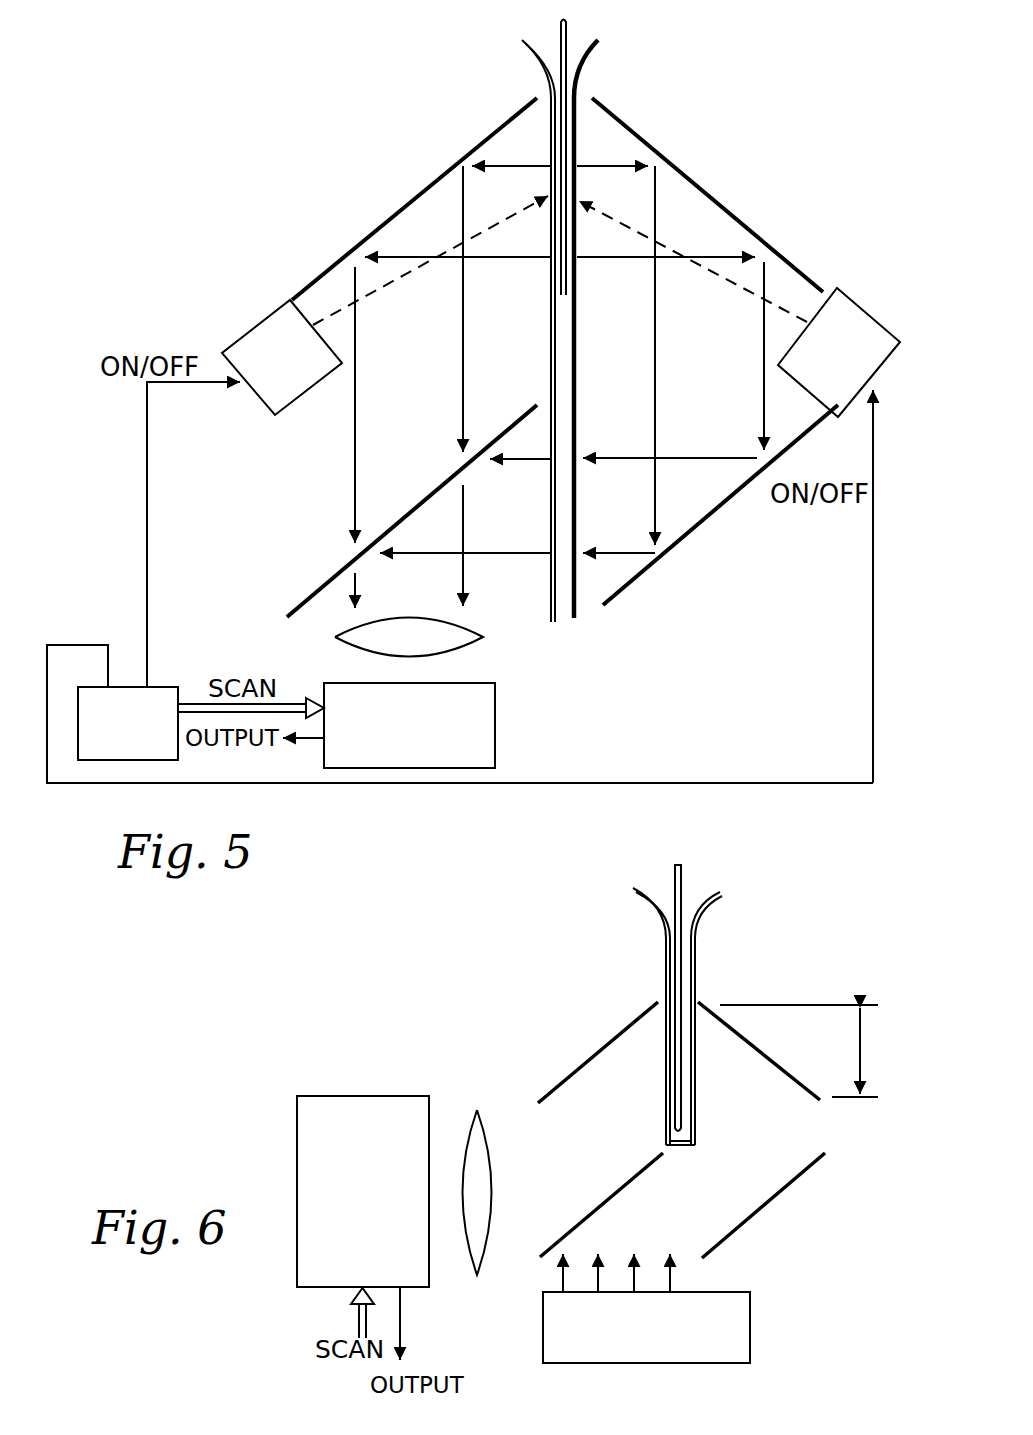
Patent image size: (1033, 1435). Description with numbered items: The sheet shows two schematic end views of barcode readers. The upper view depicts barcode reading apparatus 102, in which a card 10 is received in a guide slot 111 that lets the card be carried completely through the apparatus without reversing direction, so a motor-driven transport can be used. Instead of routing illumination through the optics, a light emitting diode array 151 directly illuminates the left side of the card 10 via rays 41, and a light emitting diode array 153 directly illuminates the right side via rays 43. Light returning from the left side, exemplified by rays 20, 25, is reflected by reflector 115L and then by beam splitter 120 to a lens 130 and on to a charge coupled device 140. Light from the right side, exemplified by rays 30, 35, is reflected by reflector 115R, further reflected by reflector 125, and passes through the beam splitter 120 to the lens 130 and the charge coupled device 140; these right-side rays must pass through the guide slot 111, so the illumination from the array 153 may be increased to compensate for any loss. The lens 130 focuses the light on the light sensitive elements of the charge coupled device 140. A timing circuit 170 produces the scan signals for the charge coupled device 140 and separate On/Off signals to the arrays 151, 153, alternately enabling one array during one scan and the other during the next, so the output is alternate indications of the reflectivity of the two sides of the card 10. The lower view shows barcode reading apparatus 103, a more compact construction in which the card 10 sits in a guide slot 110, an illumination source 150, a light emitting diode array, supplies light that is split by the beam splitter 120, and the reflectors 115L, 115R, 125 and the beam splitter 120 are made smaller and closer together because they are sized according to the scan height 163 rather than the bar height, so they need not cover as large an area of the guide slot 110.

In FIG. 5, the card 10 is at (570, 40).
In FIG. 6, the card 10 is at (682, 872).
In FIG. 5, the guide slot 111 is at (548, 88).
In FIG. 6, the guide slot 110 is at (664, 933).
In FIG. 5, the reflector 115L is at (437, 180).
In FIG. 6, the reflector 115L is at (628, 1030).
In FIG. 5, the reflector 115R is at (684, 175).
In FIG. 6, the reflector 115R is at (738, 1034).
In FIG. 5, the barcode reading apparatus 102 is at (714, 128).
In FIG. 6, the barcode reading apparatus 103 is at (760, 958).
In FIG. 5, the light emitting diode array 151 is at (268, 310).
In FIG. 5, the light emitting diode array 153 is at (880, 270).
In FIG. 6, the illumination source 150 is at (543, 1336).
In FIG. 5, the timing circuit 170 is at (157, 687).
In FIG. 5, the charge coupled device 140 is at (495, 735).
In FIG. 6, the charge coupled device 140 is at (380, 1096).
In FIG. 5, the lens 130 is at (478, 650).
In FIG. 6, the lens 130 is at (490, 1080).
In FIG. 5, the beam splitter 120 is at (302, 607).
In FIG. 6, the beam splitter 120 is at (608, 1200).
In FIG. 5, the reflector 125 is at (718, 513).
In FIG. 6, the reflector 125 is at (790, 1182).
In FIG. 5, the ray 20 is at (528, 257).
In FIG. 5, the ray 25 is at (540, 166).
In FIG. 5, the ray 30 is at (622, 257).
In FIG. 5, the ray 35 is at (632, 166).
In FIG. 5, the rays 41 is at (504, 198).
In FIG. 5, the rays 43 is at (636, 194).
In FIG. 6, the scan height 163 is at (806, 1051).